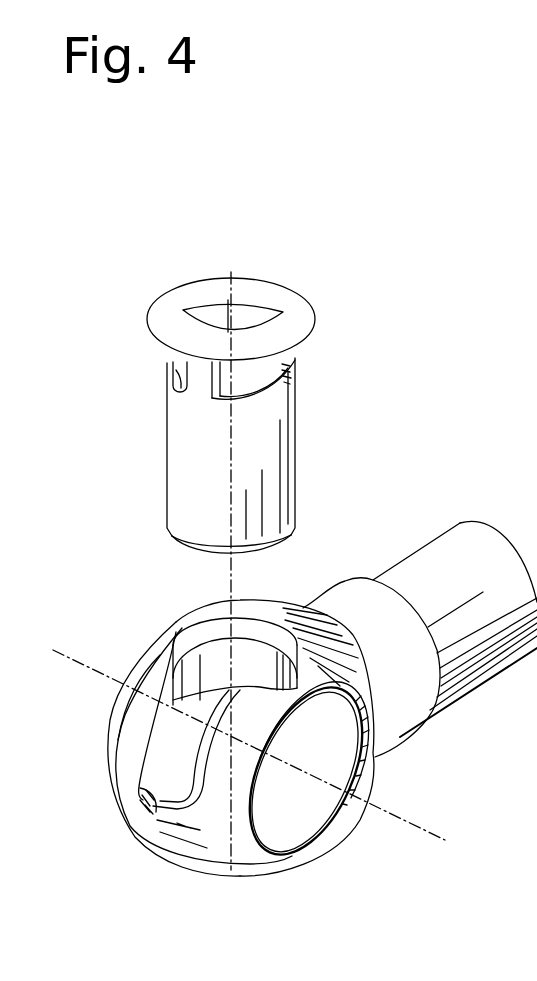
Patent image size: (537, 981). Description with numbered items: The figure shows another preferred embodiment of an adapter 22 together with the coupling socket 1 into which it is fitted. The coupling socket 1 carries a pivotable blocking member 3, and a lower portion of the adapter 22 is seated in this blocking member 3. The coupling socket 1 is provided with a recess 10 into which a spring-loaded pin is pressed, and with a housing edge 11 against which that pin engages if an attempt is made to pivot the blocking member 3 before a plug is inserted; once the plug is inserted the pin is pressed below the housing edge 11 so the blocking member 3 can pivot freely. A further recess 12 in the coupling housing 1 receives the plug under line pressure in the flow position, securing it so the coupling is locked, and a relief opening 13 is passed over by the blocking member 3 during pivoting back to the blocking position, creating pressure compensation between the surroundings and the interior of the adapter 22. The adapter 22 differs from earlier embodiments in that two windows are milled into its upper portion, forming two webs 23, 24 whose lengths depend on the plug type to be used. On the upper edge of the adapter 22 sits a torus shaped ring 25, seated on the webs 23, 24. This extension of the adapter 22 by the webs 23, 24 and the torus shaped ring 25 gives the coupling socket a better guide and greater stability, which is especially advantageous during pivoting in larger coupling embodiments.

The coupling socket 1 is at (168, 617).
The blocking member 3 is at (163, 753).
The recess 10 is at (340, 688).
The housing edge 11 is at (160, 698).
The recess 12 is at (128, 780).
The relief opening 13 is at (138, 822).
The adapter 22 is at (312, 485).
The web 23 is at (182, 358).
The web 24 is at (297, 348).
The torus shaped ring 25 is at (297, 303).